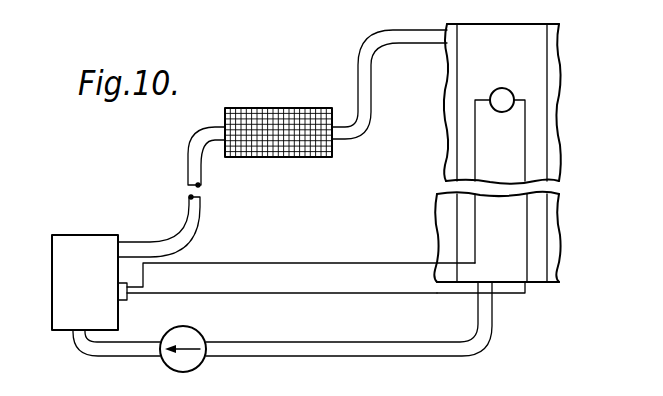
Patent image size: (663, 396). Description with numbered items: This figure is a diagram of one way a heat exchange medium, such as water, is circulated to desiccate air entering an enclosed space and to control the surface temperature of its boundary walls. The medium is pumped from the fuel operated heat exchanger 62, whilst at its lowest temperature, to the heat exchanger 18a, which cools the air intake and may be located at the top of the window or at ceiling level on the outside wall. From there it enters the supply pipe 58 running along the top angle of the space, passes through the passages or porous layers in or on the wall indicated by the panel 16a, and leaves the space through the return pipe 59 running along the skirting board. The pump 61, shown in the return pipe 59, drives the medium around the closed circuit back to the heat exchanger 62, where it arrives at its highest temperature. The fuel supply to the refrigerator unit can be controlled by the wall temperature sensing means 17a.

The panel 16a is at (535, 210).
The wall temperature sensing means 17a is at (492, 110).
The heat exchanger 18a is at (287, 117).
The supply pipe 58 is at (365, 78).
The return pipe 59 is at (362, 346).
The pump 61 is at (203, 338).
The fuel operated heat exchanger 62 is at (83, 247).